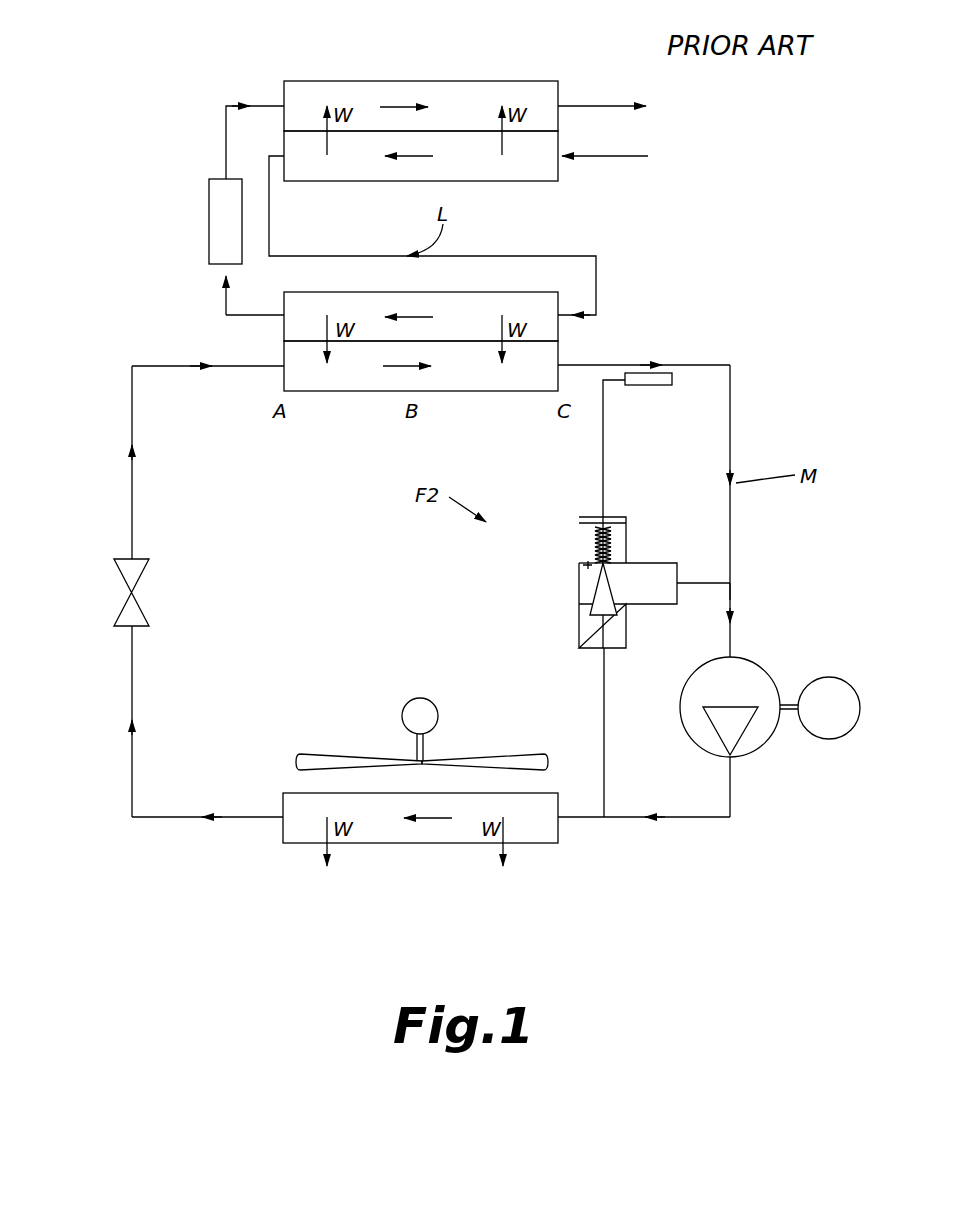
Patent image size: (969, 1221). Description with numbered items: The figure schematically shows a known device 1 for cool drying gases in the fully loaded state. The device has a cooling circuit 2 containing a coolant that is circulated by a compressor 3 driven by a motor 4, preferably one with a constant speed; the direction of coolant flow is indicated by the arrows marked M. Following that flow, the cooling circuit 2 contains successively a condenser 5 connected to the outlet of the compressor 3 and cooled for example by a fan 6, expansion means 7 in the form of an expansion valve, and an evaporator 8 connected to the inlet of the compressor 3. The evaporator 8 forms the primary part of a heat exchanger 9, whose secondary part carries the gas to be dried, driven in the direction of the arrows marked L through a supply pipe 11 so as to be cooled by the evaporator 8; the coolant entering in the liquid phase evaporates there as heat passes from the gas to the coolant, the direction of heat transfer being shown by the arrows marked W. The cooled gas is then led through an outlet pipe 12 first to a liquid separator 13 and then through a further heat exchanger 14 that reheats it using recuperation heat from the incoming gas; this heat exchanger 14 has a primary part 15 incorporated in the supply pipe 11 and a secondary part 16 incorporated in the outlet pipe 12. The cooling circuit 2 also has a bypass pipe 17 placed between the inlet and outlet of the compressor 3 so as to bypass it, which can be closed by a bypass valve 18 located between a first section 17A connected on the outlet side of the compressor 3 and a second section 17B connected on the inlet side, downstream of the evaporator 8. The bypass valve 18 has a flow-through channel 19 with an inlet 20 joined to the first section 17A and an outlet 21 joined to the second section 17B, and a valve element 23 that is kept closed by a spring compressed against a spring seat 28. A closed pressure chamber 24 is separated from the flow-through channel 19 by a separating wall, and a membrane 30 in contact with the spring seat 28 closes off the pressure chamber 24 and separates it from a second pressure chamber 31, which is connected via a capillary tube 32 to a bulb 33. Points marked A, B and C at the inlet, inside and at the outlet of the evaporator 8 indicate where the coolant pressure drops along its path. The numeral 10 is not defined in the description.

The device for cool drying gases 1 is at (795, 208).
The cooling circuit 2 is at (744, 421).
The compressor 3 is at (738, 677).
The motor 4 is at (828, 724).
The condenser 5 is at (517, 830).
The fan 6 is at (395, 760).
The expansion means 7 is at (136, 571).
The evaporator 8 is at (337, 394).
The heat exchanger 9 is at (471, 404).
The water passage of condenser 10 is at (478, 322).
The supply pipe 11 is at (596, 281).
The outlet pipe 12 is at (226, 147).
The liquid separator 13 is at (222, 247).
The heat exchanger 14 is at (410, 68).
The primary part 15 is at (485, 170).
The secondary part 16 is at (485, 100).
The bypass pipe 17 is at (578, 691).
The first section of the bypass pipe 17A is at (606, 778).
The second section of the bypass pipe 17B is at (736, 591).
The bypass valve 18 is at (568, 604).
The flow-through channel 19 is at (590, 585).
The inlet 20 is at (580, 640).
The outlet 21 is at (672, 563).
The valve element 23 is at (612, 612).
The pressure chamber 24 is at (582, 530).
The spring seat 28 is at (615, 527).
The membrane 30 is at (597, 522).
The second pressure chamber 31 is at (608, 522).
The capillary tube 32 is at (605, 445).
The bulb 33 is at (640, 384).